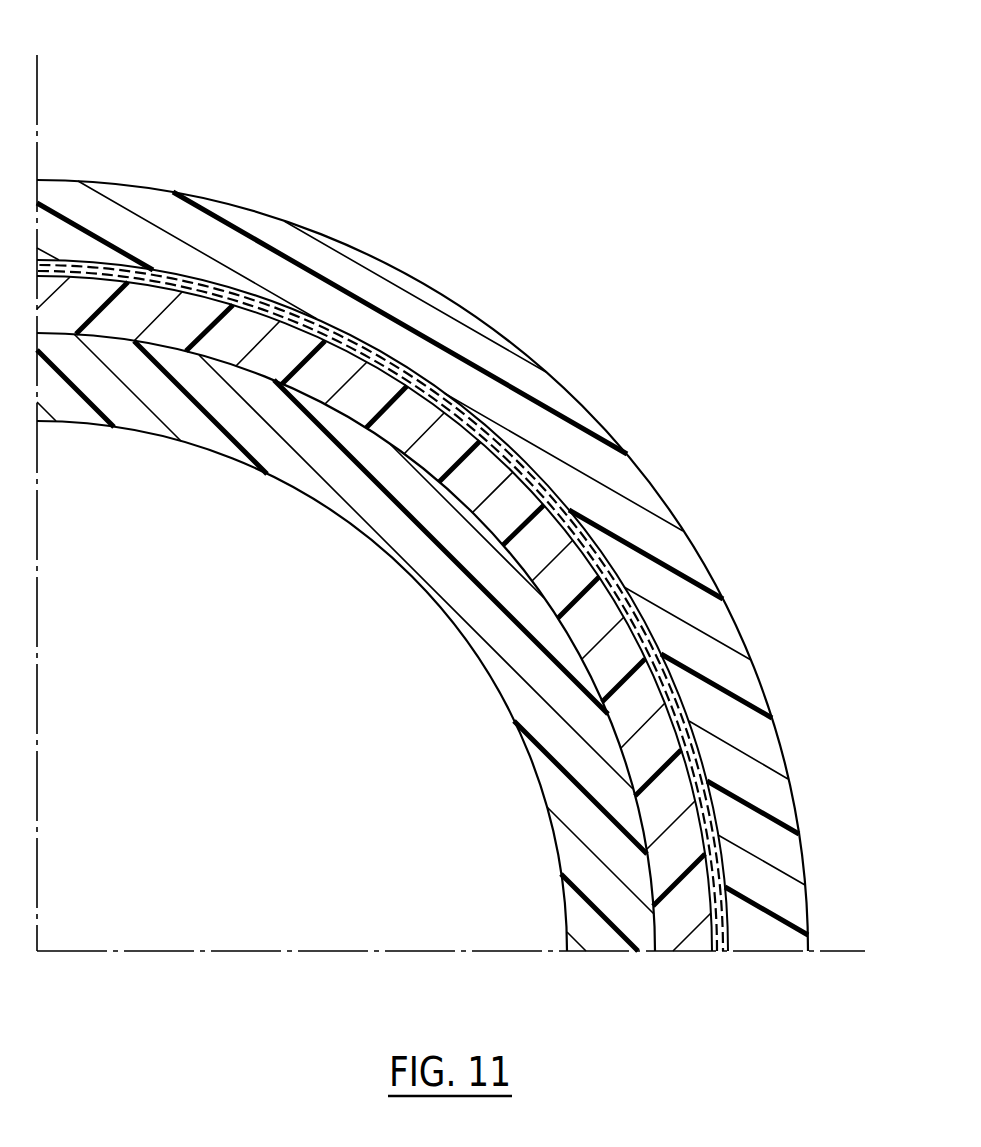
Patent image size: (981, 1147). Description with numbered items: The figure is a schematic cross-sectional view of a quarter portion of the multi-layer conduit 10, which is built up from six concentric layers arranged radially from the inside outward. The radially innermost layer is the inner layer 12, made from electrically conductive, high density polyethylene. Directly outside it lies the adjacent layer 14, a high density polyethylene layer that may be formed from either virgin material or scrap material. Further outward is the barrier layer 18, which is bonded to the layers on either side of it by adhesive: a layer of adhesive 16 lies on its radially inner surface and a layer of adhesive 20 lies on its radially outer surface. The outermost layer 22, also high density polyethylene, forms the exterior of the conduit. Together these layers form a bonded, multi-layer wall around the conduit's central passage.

The multi-layer conduit 10 is at (339, 126).
The inner layer 12 is at (308, 477).
The adjacent layer 14 is at (420, 412).
The layer of adhesive 16 is at (483, 420).
The barrier layer 18 is at (515, 476).
The layer of adhesive 20 is at (570, 507).
The outermost layer 22 is at (676, 548).